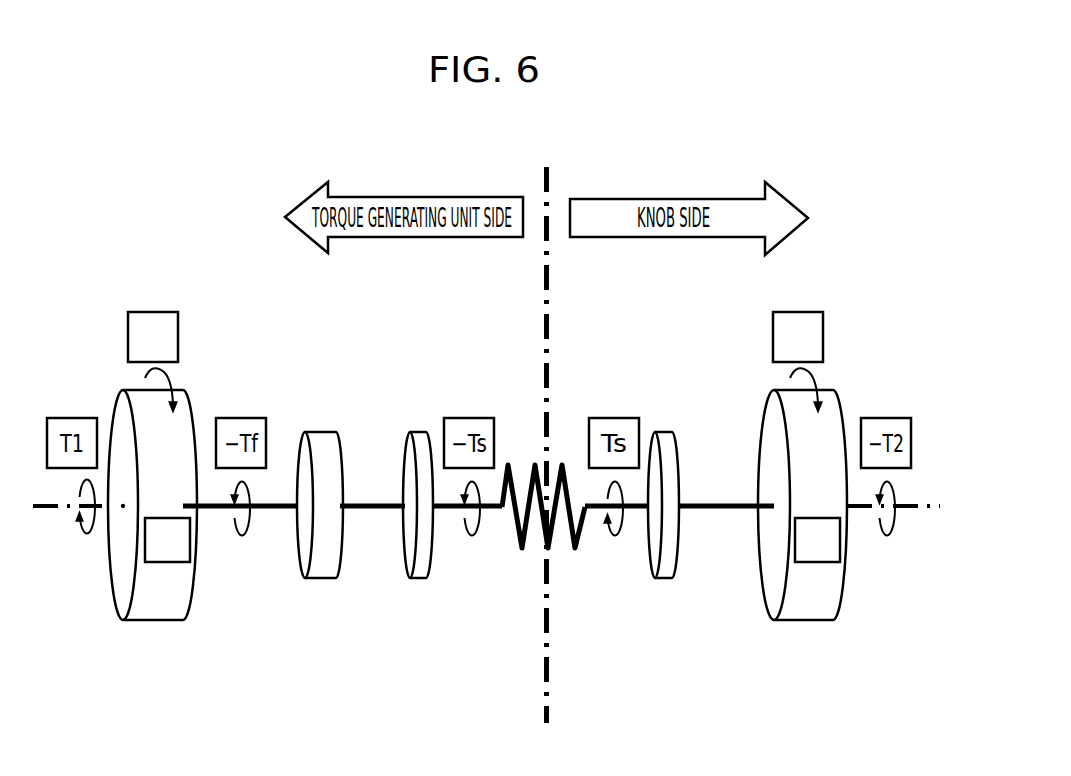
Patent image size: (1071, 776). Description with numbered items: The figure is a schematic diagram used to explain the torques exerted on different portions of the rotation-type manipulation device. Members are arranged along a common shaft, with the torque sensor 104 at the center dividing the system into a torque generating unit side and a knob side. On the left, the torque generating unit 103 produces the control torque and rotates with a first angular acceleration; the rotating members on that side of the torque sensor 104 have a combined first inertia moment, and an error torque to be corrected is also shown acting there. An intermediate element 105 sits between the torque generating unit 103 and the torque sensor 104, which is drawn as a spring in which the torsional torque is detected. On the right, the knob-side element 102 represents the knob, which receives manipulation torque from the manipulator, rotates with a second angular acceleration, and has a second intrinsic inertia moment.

The knob-side rotating body 102 is at (851, 378).
The torque generating unit 103 is at (107, 380).
The torque sensor 104 is at (683, 396).
The intermediate rotating member 105 is at (319, 418).